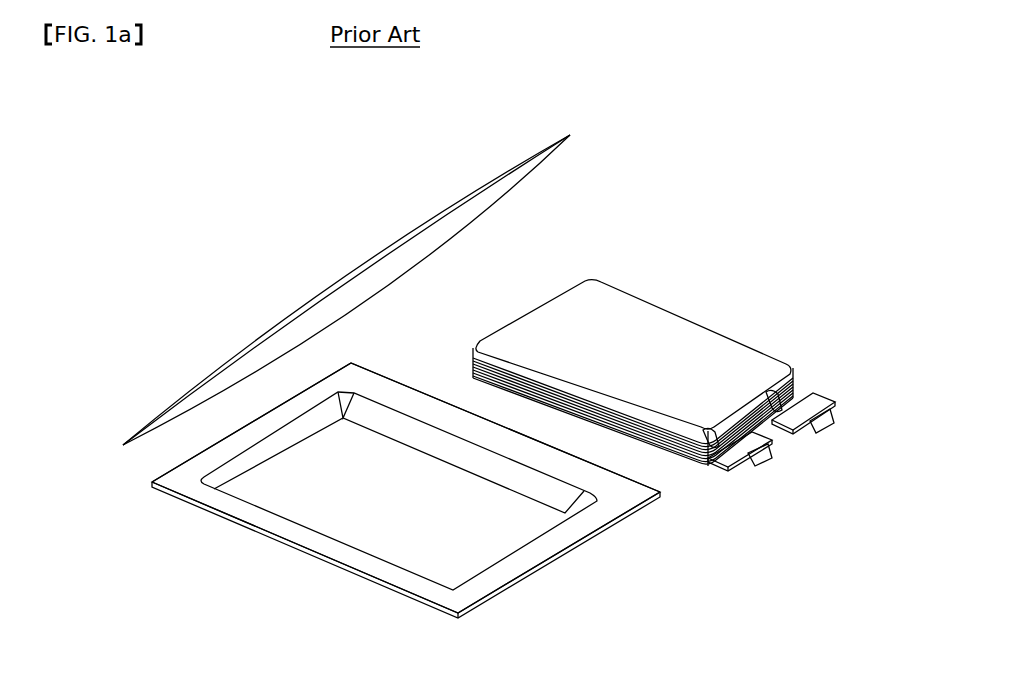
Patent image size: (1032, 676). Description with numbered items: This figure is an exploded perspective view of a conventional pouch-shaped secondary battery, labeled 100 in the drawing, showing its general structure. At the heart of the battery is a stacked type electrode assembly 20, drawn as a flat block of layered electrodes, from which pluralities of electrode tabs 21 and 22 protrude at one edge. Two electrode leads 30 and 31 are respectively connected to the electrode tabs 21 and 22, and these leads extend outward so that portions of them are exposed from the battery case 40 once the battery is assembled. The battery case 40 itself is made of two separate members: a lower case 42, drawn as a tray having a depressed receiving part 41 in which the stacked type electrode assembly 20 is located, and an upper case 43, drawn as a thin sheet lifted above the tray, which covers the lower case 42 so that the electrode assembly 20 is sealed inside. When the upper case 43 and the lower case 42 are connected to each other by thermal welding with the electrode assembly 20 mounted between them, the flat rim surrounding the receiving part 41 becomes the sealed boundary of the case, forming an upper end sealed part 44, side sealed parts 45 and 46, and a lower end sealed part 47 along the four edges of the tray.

The battery packaging assembly 100 is at (107, 124).
The stacked type electrode assembly 20 is at (703, 305).
The electrode tab 21 is at (770, 385).
The electrode tab 22 is at (708, 428).
The electrode lead 30 is at (835, 407).
The electrode lead 31 is at (770, 458).
The battery case 40 is at (118, 575).
The depressed receiving part 41 is at (405, 508).
The lower case 42 is at (180, 505).
The upper case 43 is at (125, 447).
The upper end sealed part 44 is at (538, 547).
The side sealed part 45 is at (458, 427).
The side sealed part 46 is at (317, 543).
The lower end sealed part 47 is at (237, 446).